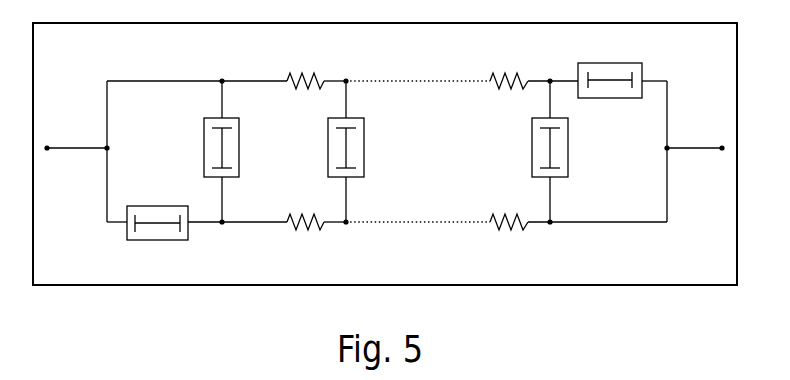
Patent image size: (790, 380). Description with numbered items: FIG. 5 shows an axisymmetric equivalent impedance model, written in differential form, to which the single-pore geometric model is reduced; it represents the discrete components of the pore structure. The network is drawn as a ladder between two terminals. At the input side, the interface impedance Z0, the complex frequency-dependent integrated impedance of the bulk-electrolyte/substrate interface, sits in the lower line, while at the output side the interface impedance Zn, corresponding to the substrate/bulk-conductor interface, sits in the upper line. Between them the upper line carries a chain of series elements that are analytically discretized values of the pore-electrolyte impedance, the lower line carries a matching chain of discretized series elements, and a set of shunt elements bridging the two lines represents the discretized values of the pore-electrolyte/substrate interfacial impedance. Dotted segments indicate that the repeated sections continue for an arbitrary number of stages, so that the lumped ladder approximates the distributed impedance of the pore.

The bulk-electrolyte/substrate interface impedance Z0 is at (157, 242).
The substrate/bulk-conductor interface impedance Zn is at (610, 62).